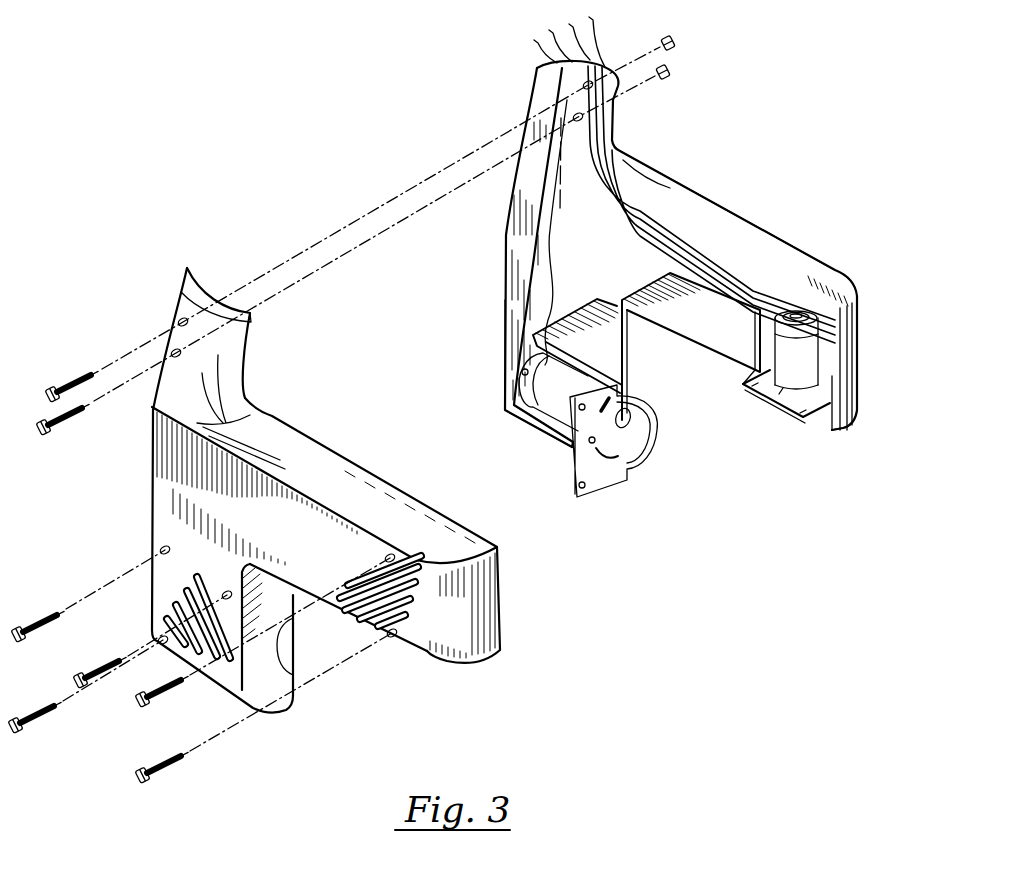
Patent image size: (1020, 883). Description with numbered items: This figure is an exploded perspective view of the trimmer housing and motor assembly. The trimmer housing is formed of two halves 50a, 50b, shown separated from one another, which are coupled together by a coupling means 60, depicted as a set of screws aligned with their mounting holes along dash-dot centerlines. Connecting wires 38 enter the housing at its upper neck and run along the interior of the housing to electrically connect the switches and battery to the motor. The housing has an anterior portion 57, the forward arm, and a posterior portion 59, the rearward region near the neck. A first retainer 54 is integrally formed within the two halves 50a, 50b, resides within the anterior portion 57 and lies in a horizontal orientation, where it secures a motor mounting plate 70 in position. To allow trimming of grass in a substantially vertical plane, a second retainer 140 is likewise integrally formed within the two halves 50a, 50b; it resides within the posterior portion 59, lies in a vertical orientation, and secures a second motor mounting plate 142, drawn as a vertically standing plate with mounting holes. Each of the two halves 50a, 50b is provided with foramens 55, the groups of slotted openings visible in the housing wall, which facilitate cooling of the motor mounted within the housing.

The connecting wires 38 is at (660, 237).
The trimmer housing half 50a is at (695, 277).
The trimmer housing half 50b is at (326, 497).
The first retainer 54 is at (835, 429).
The foramens 55 is at (413, 605).
The anterior portion 57 is at (798, 249).
The posterior portion 59 is at (520, 412).
The coupling means 60 is at (171, 766).
The motor mounting plate 70 is at (789, 417).
The second retainer 140 is at (563, 430).
The motor mounting plate 142 is at (655, 430).